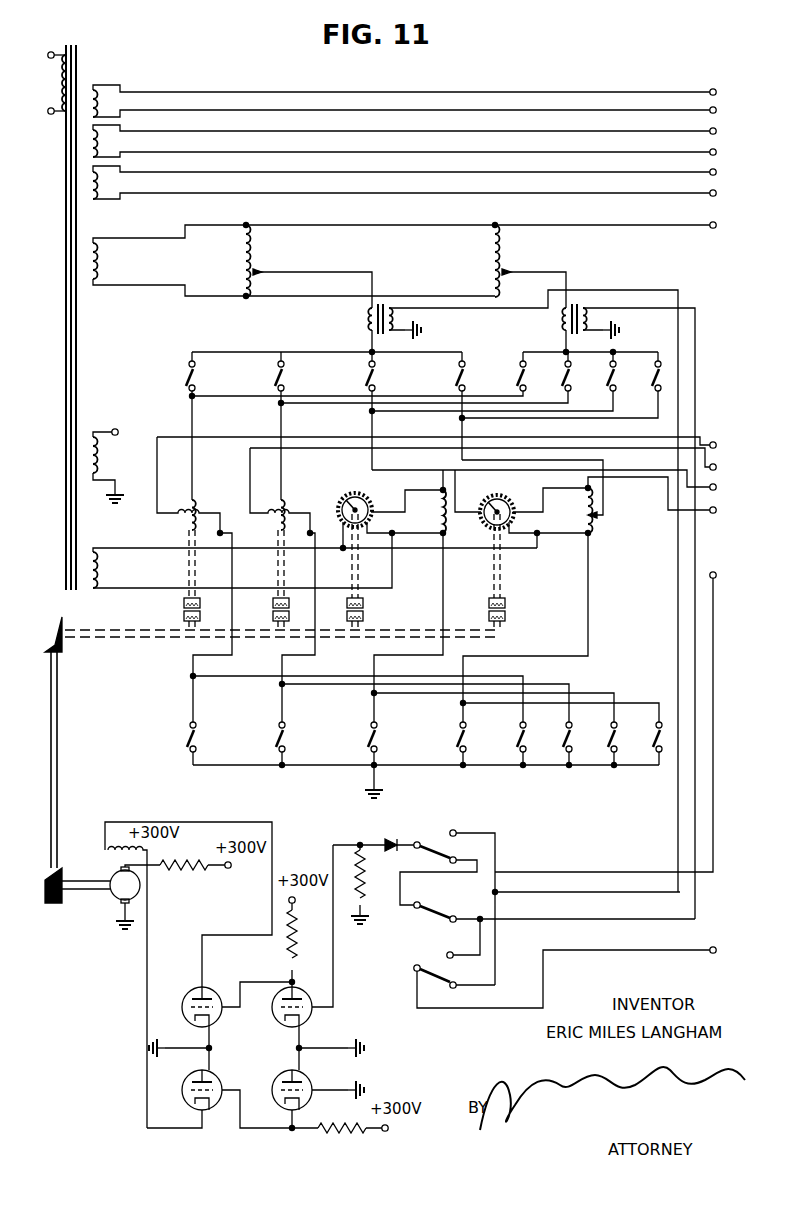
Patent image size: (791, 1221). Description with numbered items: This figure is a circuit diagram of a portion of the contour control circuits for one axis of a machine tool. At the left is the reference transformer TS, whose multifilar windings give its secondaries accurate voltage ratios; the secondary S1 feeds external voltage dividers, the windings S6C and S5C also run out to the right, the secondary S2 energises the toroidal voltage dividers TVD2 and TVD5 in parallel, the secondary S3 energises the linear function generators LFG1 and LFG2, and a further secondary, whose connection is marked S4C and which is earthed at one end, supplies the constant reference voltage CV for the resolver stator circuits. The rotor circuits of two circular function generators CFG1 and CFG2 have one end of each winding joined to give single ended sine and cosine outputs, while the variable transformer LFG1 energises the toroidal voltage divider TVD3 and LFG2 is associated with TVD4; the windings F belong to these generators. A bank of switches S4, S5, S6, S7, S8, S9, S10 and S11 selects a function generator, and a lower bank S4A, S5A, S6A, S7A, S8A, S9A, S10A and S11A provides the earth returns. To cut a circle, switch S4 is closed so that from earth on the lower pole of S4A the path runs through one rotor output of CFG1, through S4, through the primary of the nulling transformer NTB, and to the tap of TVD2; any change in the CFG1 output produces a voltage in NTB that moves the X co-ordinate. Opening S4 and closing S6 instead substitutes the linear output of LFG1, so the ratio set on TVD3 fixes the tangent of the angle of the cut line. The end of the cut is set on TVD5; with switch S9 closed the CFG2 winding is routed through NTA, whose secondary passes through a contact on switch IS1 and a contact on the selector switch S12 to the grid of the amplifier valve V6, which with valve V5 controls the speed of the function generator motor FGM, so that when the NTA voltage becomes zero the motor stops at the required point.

The reference transformer TS is at (75, 317).
The secondary S1 is at (404, 101).
The secondary winding S6C is at (404, 141).
The secondary winding S5C is at (404, 182).
The secondary S2 is at (404, 259).
The toroidal voltage divider TVD2 is at (307, 265).
The toroidal voltage divider TVD5 is at (529, 265).
The nulling transformer NTB is at (507, 591).
The nulling transformer NTA is at (611, 611).
The switch S4 is at (340, 426).
The switch S5 is at (410, 426).
The switch S6 is at (478, 411).
The switch S7 is at (545, 435).
The switch S8 is at (509, 371).
The switch S9 is at (554, 371).
The switch S10 is at (599, 371).
The switch S11 is at (644, 371).
The constant reference voltage CV is at (128, 433).
The secondary S4 winding connection S4C is at (115, 467).
The circular function generator CFG1 is at (194, 581).
The circular function generator CFG2 is at (281, 586).
The field winding F is at (292, 509).
The linear function generator LFG1 is at (382, 550).
The linear function generator LFG2 is at (521, 550).
The toroidal voltage divider TVD3 is at (410, 597).
The tapped voltage divider TVD4 is at (557, 605).
The secondary S3 is at (315, 560).
The switch S4A is at (176, 743).
The switch S5A is at (265, 743).
The switch S6A is at (356, 743).
The switch S7A is at (445, 743).
The switch S8A is at (506, 743).
The switch S9A is at (552, 743).
The switch S10A is at (596, 743).
The switch S11A is at (642, 743).
The function generator motor FGM is at (167, 975).
The valve V5 is at (219, 1055).
The valve V6 is at (330, 989).
The switch S12 is at (414, 895).
The switch 1S1 IS1 is at (557, 948).